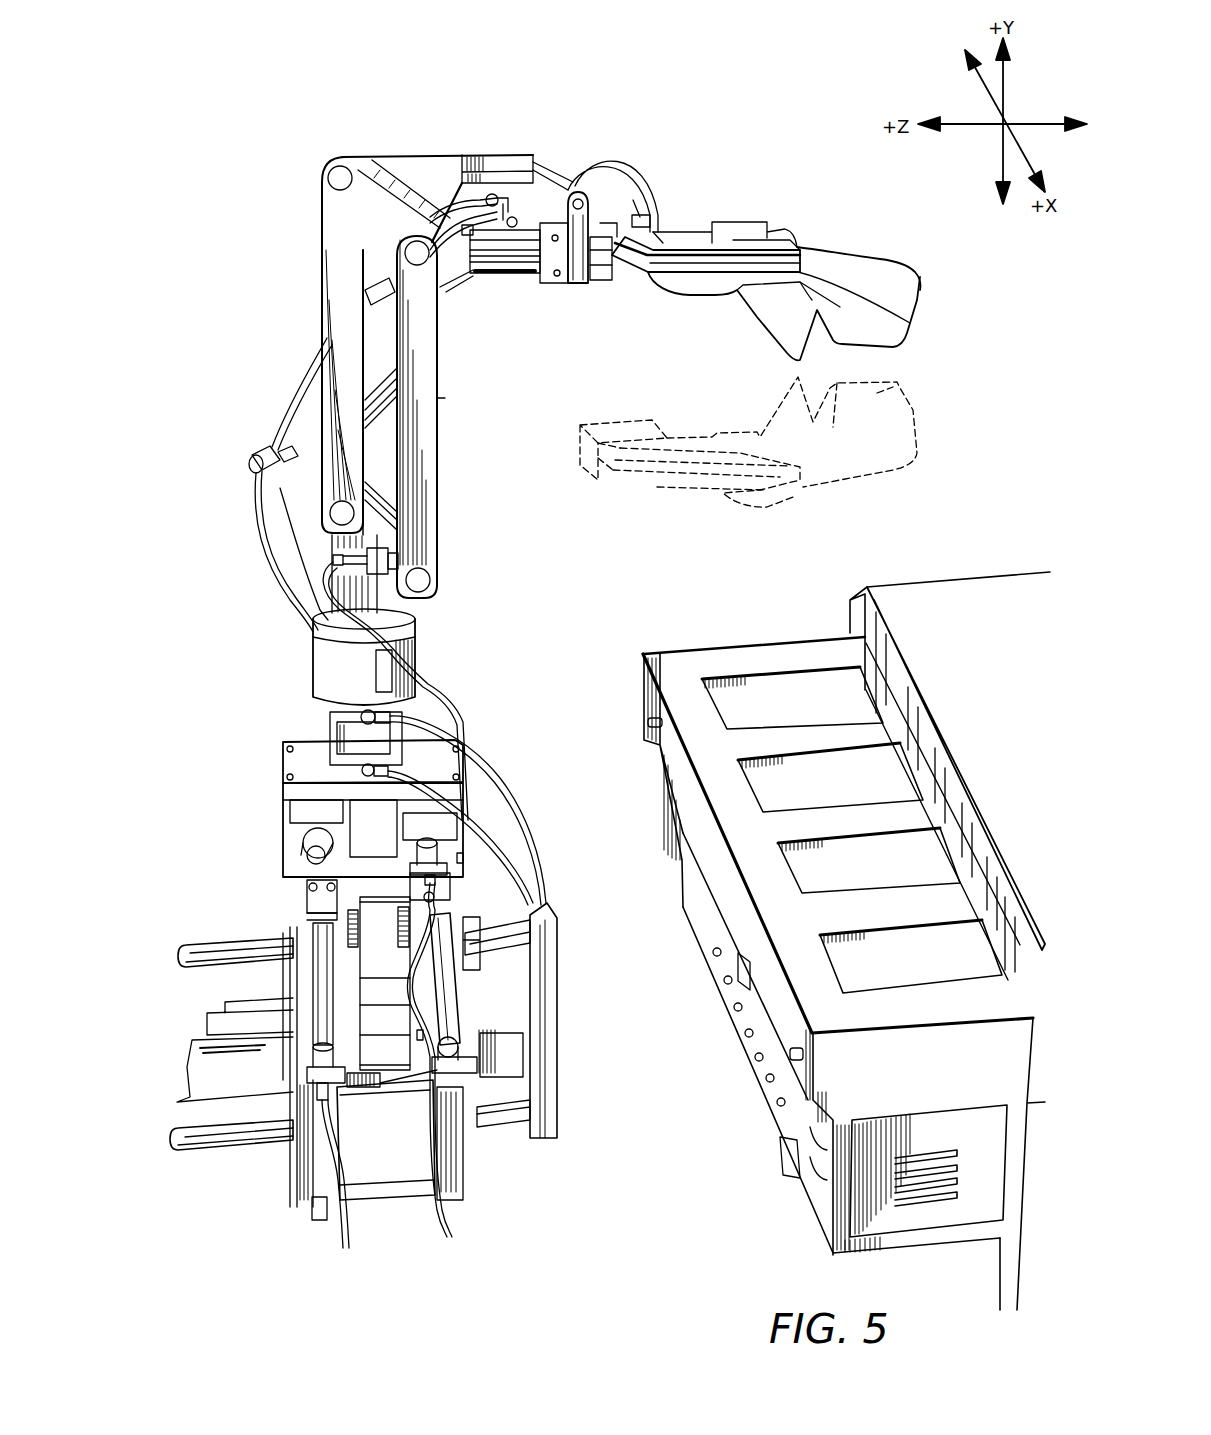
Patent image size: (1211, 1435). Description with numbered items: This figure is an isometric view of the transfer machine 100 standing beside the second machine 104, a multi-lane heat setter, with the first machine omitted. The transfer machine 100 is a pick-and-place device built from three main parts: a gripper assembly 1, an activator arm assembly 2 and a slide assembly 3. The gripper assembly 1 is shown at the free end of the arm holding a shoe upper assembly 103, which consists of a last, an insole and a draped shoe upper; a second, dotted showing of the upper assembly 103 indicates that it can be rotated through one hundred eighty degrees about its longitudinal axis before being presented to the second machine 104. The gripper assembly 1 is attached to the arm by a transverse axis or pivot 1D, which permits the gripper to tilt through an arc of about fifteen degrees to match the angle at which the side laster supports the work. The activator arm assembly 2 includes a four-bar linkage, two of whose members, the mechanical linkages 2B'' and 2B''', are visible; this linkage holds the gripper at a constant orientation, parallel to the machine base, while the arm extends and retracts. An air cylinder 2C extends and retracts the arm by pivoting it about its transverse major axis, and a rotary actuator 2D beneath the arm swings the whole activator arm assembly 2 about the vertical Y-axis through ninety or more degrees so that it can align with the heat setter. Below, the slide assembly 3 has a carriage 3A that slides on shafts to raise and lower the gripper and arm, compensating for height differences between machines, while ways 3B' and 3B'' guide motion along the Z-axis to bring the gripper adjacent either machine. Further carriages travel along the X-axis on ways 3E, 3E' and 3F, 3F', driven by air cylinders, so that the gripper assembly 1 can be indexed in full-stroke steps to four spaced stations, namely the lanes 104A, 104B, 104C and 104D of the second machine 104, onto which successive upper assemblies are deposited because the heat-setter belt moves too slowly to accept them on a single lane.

The transfer machine 100 is at (318, 275).
The mechanical linkage 2B''' is at (299, 346).
The mechanical linkage 2B'' is at (452, 417).
The activator arm assembly 2 is at (514, 287).
The transverse axis or pivot 1D is at (583, 205).
The gripper assembly 1 is at (780, 253).
The shoe upper assembly 103 is at (898, 302).
The air cylinder 2C is at (298, 472).
The rotary actuator 2D is at (360, 681).
The slide assembly 3 is at (480, 863).
The way 3F is at (272, 846).
The way 3F' is at (476, 816).
The way 3B' is at (534, 998).
The way 3E is at (263, 1075).
The way 3E' is at (517, 993).
The way 3B'' is at (369, 1145).
The carriage 3A is at (385, 1178).
The second machine 104 is at (943, 594).
The lane 104A is at (925, 972).
The lane 104B is at (887, 880).
The lane 104C is at (850, 797).
The lane 104D is at (818, 710).